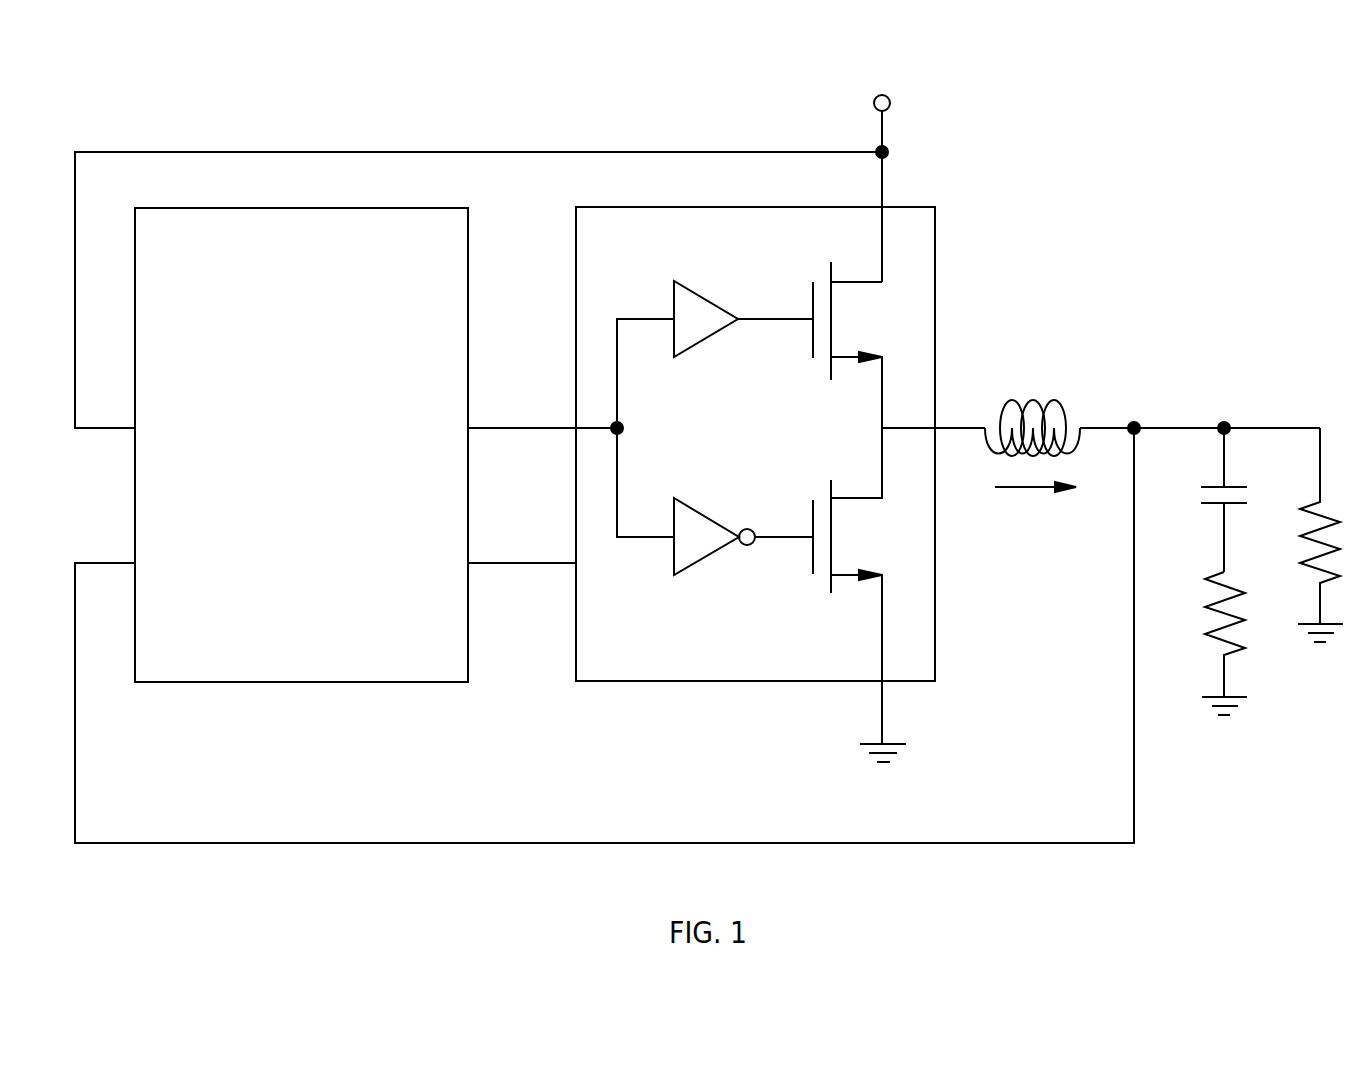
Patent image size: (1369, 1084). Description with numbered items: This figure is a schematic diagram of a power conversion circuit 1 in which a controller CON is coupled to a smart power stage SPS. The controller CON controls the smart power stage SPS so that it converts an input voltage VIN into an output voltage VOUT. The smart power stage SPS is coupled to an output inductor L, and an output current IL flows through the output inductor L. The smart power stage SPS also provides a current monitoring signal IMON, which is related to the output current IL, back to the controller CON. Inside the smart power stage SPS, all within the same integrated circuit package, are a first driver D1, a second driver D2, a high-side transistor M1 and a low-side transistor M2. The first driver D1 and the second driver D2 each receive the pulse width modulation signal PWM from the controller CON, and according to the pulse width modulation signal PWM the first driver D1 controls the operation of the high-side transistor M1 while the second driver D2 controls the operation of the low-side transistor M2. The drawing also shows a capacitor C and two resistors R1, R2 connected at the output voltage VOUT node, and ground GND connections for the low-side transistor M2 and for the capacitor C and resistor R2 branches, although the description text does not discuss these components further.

The power conversion circuit 1 is at (53, 82).
The controller CON is at (272, 477).
The smart power stage SPS is at (597, 663).
The first driver D1 is at (679, 333).
The second driver D2 is at (679, 551).
The high-side transistor M1 is at (859, 345).
The low-side transistor M2 is at (859, 586).
The output inductor L is at (981, 411).
The output capacitor C is at (1209, 500).
The first resistor R1 is at (1211, 663).
The second resistor R2 is at (1306, 555).
The pulse width modulation signal PWM is at (545, 413).
The current monitoring signal IMON is at (522, 547).
The input voltage VIN is at (882, 172).
The output voltage VOUT is at (1200, 410).
The output current IL is at (1035, 507).
The ground GND is at (882, 774).